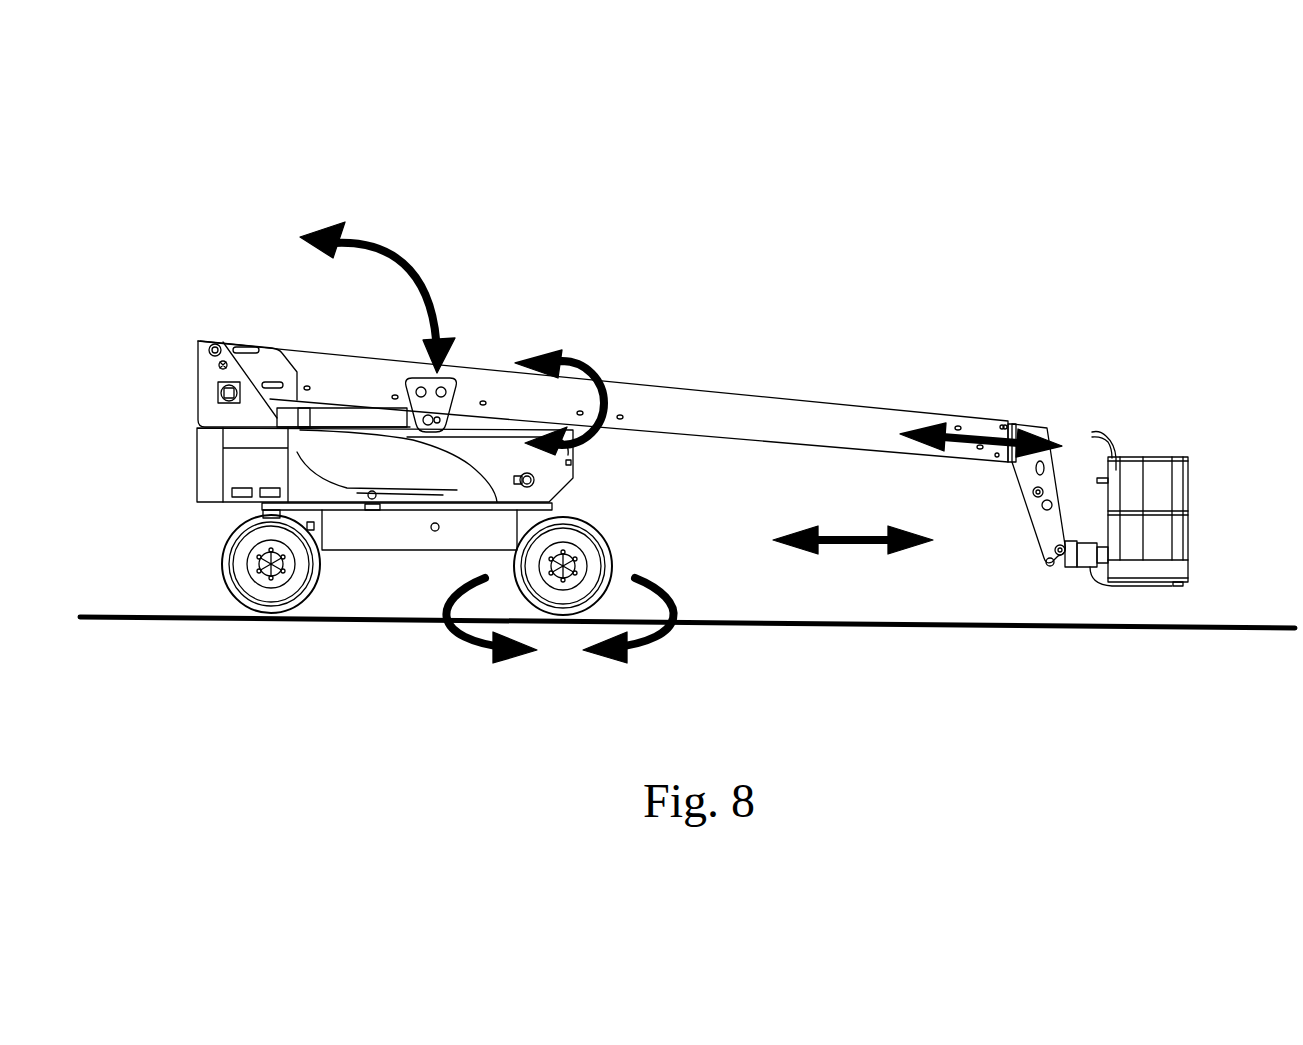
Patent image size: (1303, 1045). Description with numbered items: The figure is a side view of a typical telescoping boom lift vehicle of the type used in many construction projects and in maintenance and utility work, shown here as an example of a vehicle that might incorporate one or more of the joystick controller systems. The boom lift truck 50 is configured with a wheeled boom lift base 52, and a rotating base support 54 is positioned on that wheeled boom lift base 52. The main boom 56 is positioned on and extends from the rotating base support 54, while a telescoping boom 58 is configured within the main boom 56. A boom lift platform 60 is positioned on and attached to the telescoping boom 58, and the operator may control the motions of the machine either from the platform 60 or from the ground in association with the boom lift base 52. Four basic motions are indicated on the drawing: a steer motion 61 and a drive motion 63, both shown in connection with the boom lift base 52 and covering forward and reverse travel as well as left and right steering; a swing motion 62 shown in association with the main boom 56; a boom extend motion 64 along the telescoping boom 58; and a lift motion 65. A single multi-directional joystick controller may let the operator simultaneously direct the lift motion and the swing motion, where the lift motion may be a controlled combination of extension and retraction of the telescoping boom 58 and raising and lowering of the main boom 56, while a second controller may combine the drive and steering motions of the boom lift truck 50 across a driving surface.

The boom lift truck 50 is at (950, 273).
The wheeled boom lift base 52 is at (408, 533).
The rotating base support 54 is at (205, 478).
The main boom 56 is at (866, 427).
The telescoping boom 58 is at (1027, 488).
The boom lift platform 60 is at (1203, 563).
The steer function arrows 61 is at (642, 643).
The swing function arrow 62 is at (588, 373).
The drive function arrow 63 is at (883, 532).
The boom extend function arrow 64 is at (972, 433).
The lift function arrow 65 is at (433, 292).